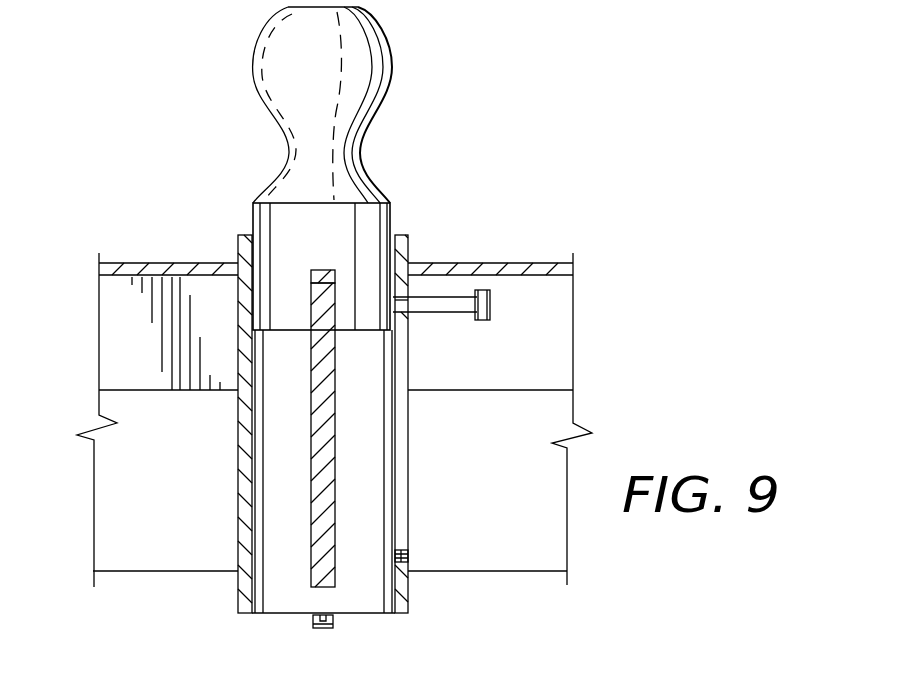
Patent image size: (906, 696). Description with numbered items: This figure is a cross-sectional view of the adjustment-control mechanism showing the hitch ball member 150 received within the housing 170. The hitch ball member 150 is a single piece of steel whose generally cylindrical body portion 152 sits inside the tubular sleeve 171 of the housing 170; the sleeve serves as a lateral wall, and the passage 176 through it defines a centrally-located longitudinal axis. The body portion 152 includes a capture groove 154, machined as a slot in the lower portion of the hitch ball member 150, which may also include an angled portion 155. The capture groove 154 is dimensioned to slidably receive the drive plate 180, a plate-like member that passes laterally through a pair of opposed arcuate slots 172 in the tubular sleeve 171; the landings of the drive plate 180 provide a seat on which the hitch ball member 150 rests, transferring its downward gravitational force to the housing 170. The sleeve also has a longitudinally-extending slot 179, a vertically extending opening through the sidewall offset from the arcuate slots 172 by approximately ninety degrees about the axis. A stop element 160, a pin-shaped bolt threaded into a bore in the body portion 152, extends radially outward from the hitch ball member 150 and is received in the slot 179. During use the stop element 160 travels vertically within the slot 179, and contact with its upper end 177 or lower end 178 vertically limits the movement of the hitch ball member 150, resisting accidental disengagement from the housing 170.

The hitch ball member 150 is at (413, 110).
The body portion 152 is at (253, 207).
The capture groove 154 is at (311, 289).
The angled portion 155 is at (327, 270).
The stop element 160 is at (432, 322).
The housing 170 is at (237, 519).
The tubular sleeve 171 is at (238, 594).
The arcuate slots 172 is at (337, 493).
The passage 176 is at (258, 600).
The upper end 177 is at (406, 300).
The lower end 178 is at (401, 553).
The longitudinally-extending slot 179 is at (405, 444).
The drive plate 180 is at (318, 427).